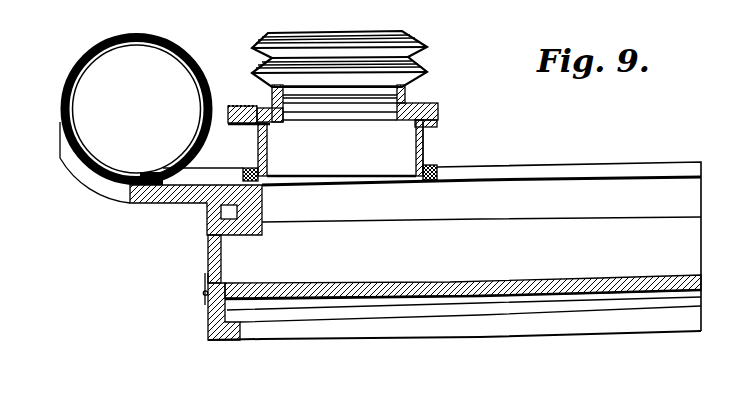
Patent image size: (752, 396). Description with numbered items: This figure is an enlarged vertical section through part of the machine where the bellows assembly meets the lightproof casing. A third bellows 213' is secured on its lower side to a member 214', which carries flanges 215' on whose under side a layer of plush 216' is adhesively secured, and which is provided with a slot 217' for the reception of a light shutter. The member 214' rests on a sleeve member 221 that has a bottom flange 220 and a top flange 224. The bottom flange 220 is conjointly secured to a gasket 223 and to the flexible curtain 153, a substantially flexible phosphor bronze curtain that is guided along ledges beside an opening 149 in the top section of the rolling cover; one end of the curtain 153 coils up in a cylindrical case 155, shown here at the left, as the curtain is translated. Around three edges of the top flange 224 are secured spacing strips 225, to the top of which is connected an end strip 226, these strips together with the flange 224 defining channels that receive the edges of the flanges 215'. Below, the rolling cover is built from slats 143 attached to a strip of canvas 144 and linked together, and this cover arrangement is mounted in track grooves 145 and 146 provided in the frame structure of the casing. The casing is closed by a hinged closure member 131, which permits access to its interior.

The cylindrical case 155 is at (78, 66).
The end strip 226 is at (231, 106).
The flanges 215' is at (333, 90).
The third bellows 213' is at (365, 54).
The member 214' is at (374, 102).
The top flange 224 is at (437, 124).
The sleeve member 221 is at (424, 143).
The bottom flange 220 is at (437, 174).
The flexible curtain 153 is at (540, 170).
The opening 149 is at (667, 170).
The slot 217' is at (340, 129).
The layer of plush 216' is at (340, 148).
The spacing strips 225 is at (228, 123).
The gasket 223 is at (262, 182).
The track groove 146 is at (207, 226).
The hinged closure member 131 is at (208, 264).
The track groove 145 is at (210, 320).
The strip of canvas 144 is at (397, 299).
The slats 143 is at (463, 312).